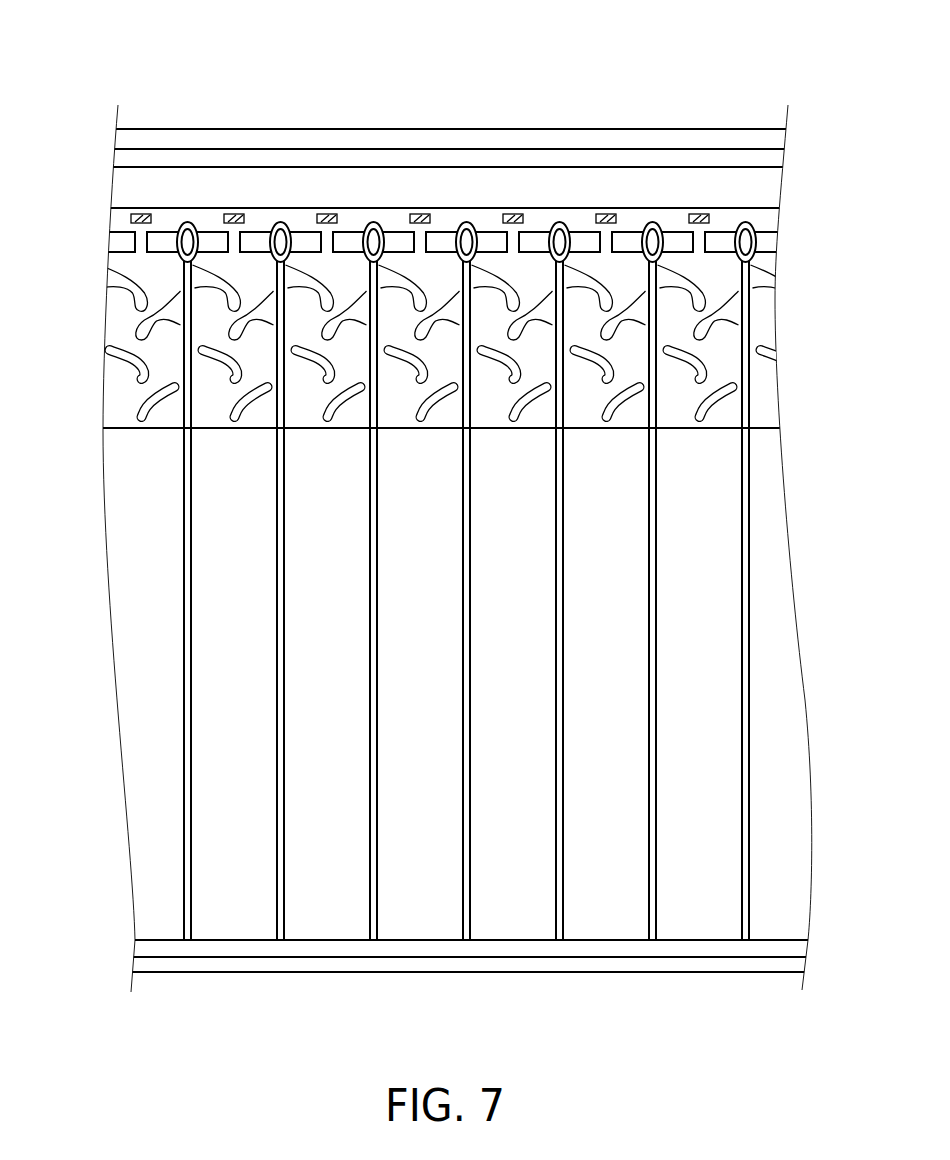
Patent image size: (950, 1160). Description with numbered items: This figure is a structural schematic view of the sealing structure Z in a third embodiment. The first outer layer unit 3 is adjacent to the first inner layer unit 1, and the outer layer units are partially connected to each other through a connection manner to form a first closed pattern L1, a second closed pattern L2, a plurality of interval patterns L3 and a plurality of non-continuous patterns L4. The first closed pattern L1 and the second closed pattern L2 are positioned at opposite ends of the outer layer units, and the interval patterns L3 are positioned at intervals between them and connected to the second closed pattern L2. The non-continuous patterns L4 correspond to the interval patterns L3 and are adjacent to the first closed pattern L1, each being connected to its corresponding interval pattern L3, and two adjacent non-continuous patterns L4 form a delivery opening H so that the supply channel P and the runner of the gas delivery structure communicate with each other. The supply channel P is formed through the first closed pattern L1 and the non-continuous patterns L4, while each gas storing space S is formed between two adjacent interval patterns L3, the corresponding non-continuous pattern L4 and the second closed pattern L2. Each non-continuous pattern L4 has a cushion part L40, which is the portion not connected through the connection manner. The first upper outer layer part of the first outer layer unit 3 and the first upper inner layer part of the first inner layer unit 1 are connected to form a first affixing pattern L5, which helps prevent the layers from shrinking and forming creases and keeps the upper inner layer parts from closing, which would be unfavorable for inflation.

The sealing structure Z is at (475, 83).
The supply channel P is at (767, 180).
The first inner layer unit 1 is at (681, 208).
The first outer layer unit 3 is at (712, 713).
The gas storing space S is at (712, 808).
The delivery opening H is at (517, 242).
The first closed pattern L1 is at (622, 158).
The second closed pattern L2 is at (628, 948).
The interval pattern L3 is at (520, 647).
The non-continuous pattern L4 is at (420, 166).
The cushion part L40 is at (375, 240).
The first affixing pattern L5 is at (141, 214).